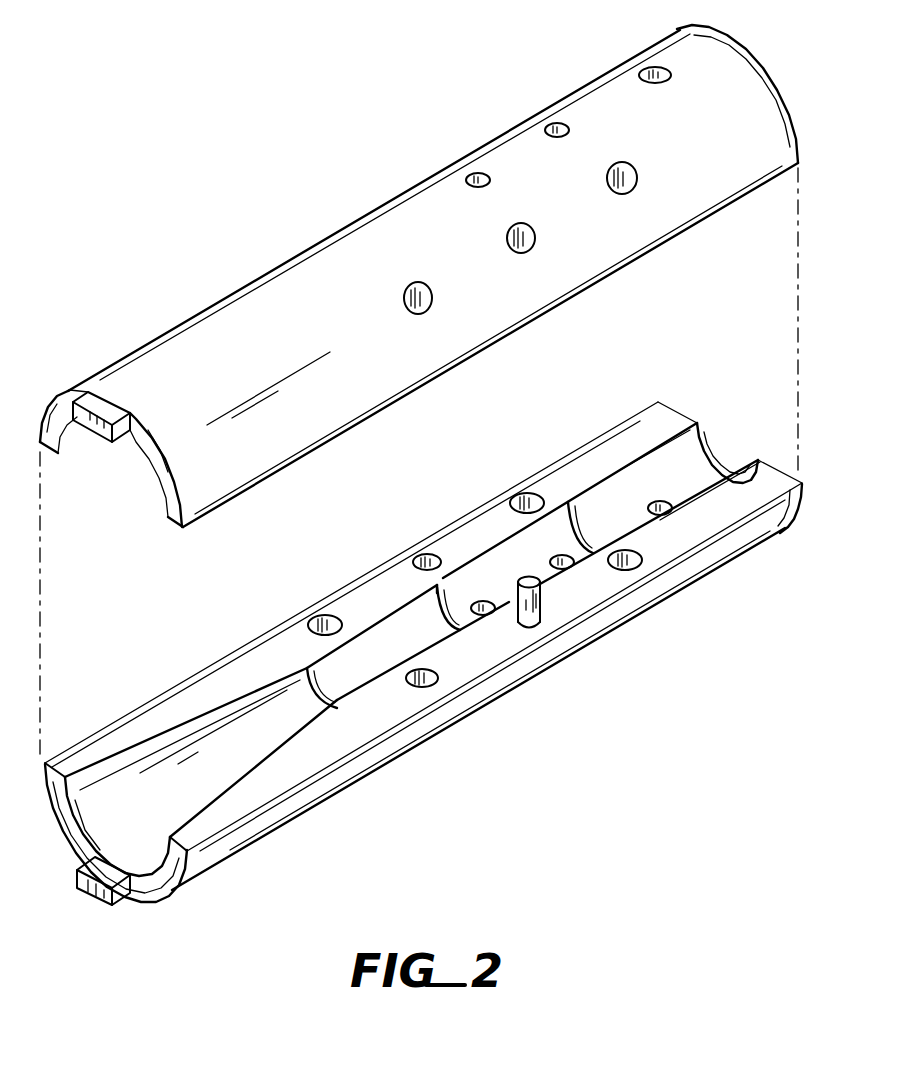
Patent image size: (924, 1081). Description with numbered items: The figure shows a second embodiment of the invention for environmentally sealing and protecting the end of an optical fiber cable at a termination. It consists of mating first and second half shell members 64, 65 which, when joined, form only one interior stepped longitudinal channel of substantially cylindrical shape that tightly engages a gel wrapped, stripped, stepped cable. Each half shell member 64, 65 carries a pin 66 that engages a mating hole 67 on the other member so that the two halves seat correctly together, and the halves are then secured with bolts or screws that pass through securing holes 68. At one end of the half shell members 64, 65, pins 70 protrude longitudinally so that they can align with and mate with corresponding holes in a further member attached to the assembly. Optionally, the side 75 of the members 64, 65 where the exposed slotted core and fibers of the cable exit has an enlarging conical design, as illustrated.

The first half shell member 64 is at (686, 398).
The second half shell member 65 is at (664, 249).
The pin 66 is at (531, 617).
The mating hole 67 is at (508, 232).
The securing holes 68 is at (610, 167).
The pins 70 is at (103, 405).
The side 75 is at (213, 763).